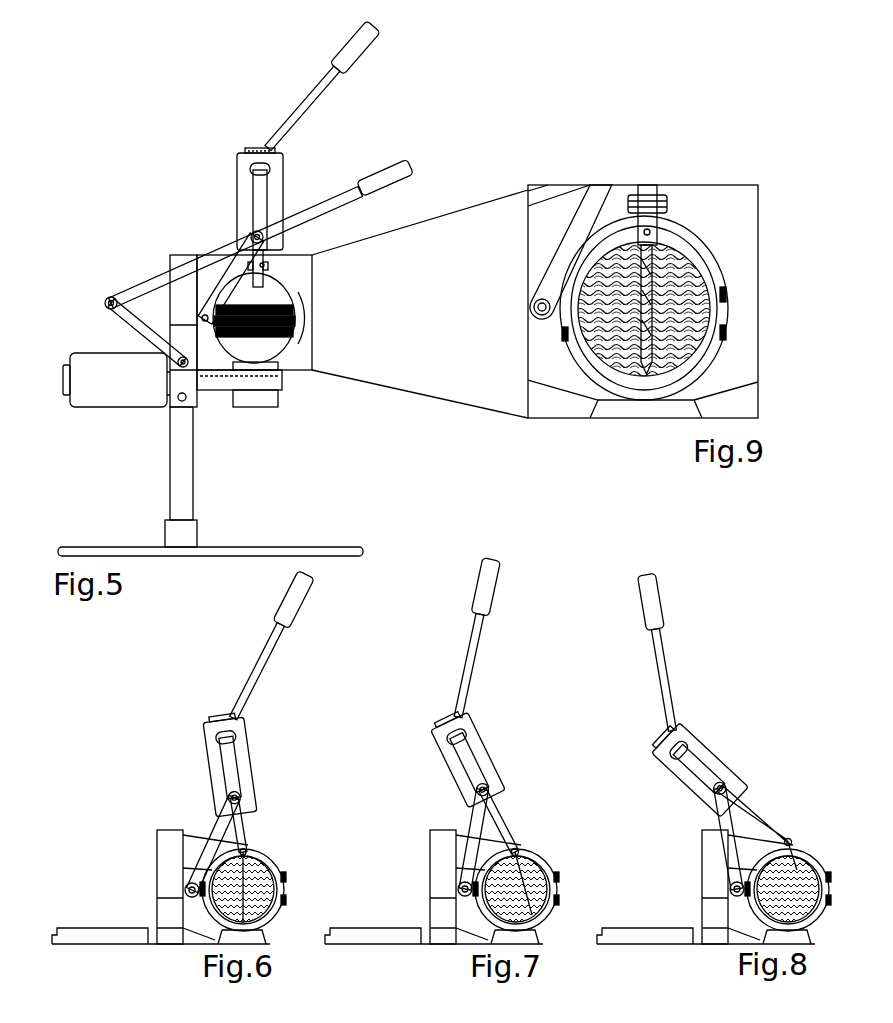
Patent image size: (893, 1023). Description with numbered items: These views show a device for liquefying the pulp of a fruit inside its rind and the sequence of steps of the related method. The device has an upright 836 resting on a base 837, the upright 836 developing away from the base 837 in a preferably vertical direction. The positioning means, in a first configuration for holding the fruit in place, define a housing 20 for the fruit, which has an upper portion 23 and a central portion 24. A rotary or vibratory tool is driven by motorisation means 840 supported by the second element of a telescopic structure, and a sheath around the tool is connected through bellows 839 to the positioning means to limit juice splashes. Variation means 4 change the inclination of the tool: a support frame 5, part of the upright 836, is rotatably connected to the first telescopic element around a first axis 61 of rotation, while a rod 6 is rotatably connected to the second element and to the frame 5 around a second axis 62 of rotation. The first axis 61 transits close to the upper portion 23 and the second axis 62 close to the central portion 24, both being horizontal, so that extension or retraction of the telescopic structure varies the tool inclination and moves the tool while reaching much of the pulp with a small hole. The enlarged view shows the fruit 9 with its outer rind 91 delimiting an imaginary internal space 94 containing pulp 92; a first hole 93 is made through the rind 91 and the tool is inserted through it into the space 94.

In FIG. 5, the motorisation means 840 is at (290, 184).
In FIG. 5, the bellows 839 is at (272, 257).
In FIG. 5, the upper portion of the housing 23 is at (292, 280).
In FIG. 5, the housing 20 is at (300, 318).
In FIG. 5, the central portion of the housing 24 is at (305, 330).
In FIG. 5, the upright 836 is at (208, 462).
In FIG. 5, the base 837 is at (282, 544).
In FIG. 9, the fruit 9 is at (703, 236).
In FIG. 9, the outer rind 91 is at (716, 257).
In FIG. 9, the imaginary internal space 94 is at (722, 311).
In FIG. 9, the pulp 92 is at (689, 342).
In FIG. 6, the variation means 4 is at (158, 785).
In FIG. 6, the rod 6 is at (195, 850).
In FIG. 6, the support frame 5 is at (146, 860).
In FIG. 6, the first hole 93 is at (259, 852).
In FIG. 7, the second axis of rotation 62 is at (451, 885).
In FIG. 7, the first axis of rotation 61 is at (522, 836).